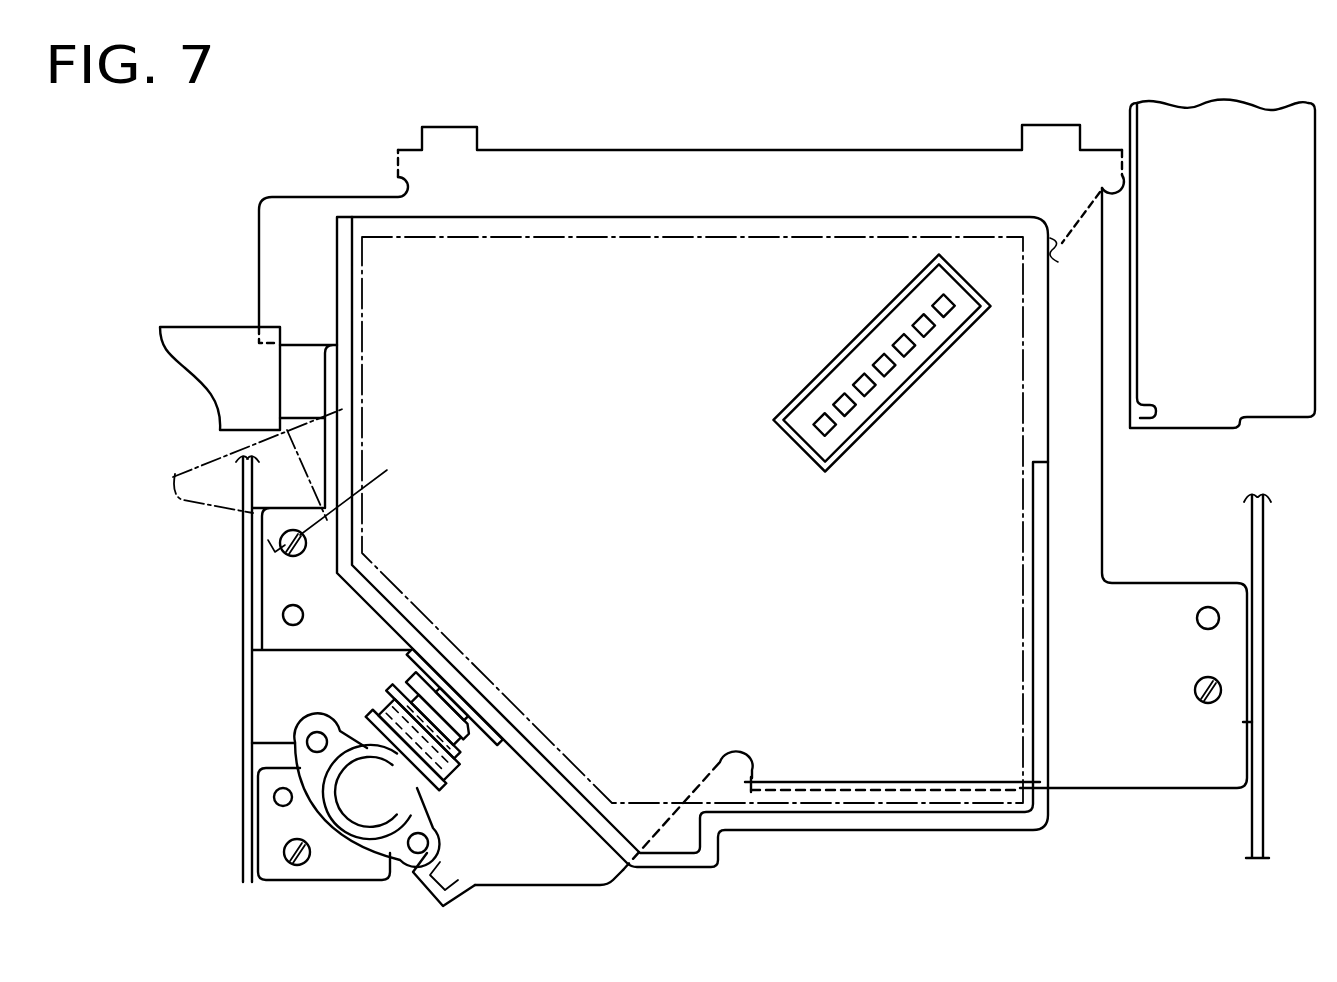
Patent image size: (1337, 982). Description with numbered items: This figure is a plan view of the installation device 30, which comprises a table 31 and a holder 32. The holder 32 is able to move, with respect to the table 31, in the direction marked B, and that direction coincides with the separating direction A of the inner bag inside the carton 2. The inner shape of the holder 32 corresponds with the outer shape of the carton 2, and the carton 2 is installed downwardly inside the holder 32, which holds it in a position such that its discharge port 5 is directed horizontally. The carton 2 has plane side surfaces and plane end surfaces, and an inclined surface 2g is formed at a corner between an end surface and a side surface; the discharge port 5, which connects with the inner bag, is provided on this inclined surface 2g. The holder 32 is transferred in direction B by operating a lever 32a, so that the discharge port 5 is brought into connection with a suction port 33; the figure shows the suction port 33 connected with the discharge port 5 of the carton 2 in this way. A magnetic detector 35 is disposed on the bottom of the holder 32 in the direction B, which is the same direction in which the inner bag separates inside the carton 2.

The installation device 30 is at (906, 121).
The lever 32a is at (197, 325).
The holder 32 is at (912, 832).
The magnetic detector 35 is at (830, 360).
The table 31 is at (1108, 782).
The carton 2 is at (811, 807).
The inclined surface 2g is at (472, 688).
The discharge port 5 is at (398, 679).
The suction port 33 is at (467, 772).